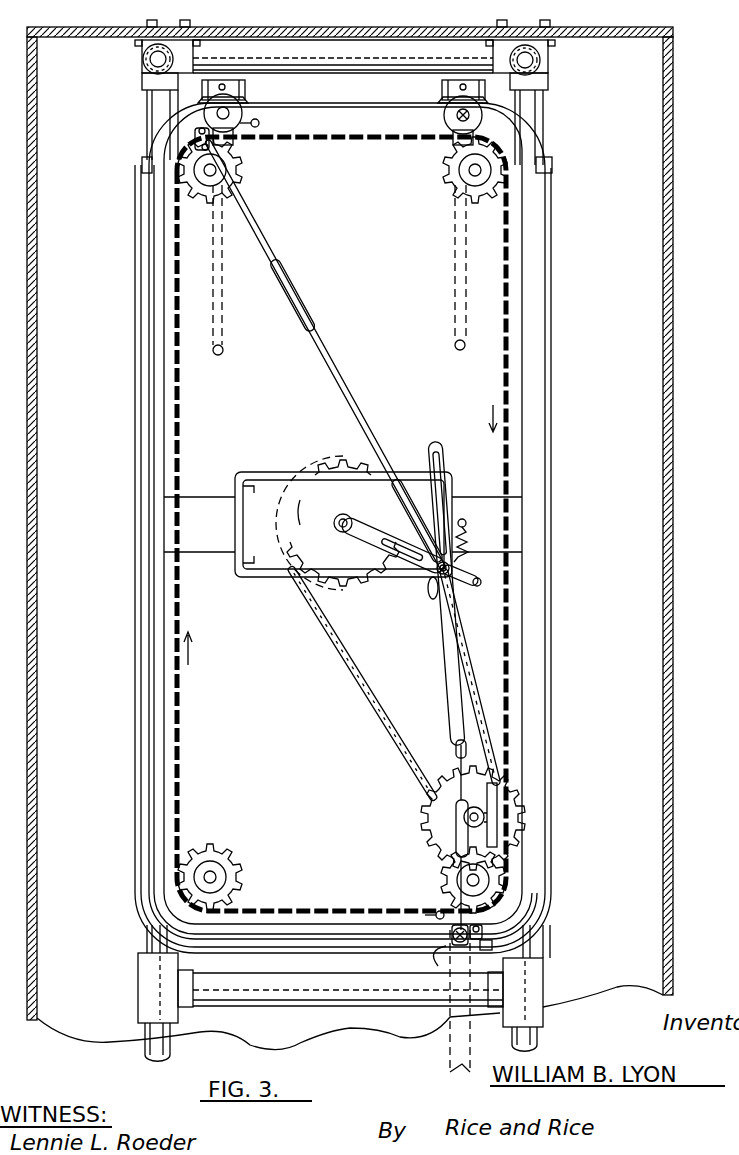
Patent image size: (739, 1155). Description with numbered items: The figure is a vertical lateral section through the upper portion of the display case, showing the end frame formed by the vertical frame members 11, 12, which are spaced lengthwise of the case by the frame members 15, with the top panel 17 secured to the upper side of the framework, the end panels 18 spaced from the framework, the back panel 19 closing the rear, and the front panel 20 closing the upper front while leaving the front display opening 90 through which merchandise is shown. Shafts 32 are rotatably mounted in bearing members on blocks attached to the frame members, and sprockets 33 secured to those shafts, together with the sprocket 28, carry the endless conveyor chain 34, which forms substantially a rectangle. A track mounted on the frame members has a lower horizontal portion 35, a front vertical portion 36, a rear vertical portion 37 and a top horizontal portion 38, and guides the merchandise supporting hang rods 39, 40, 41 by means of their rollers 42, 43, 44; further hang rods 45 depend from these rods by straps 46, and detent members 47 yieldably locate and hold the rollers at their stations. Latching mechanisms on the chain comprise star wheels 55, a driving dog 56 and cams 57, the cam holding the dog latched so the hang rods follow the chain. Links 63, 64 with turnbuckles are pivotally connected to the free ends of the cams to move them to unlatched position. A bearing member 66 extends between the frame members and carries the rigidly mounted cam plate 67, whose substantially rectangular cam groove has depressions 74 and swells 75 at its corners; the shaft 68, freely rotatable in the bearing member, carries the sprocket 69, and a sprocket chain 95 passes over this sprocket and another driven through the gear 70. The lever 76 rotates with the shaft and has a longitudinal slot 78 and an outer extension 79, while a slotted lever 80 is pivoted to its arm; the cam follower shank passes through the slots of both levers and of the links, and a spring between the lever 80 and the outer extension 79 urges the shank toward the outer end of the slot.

The vertical frame member 11 is at (532, 952).
The vertical frame member 12 is at (152, 940).
The frame member 15 is at (540, 60).
The top panel 17 is at (278, 37).
The end panel 18 is at (106, 777).
The back panel 19 is at (40, 690).
The front panel 20 is at (668, 510).
The sprocket 28 is at (438, 877).
The shaft 32 is at (210, 868).
The sprocket 33 is at (230, 868).
The endless conveyor chain 34 is at (505, 458).
The lower horizontal track portion 35 is at (305, 935).
The front vertical track portion 36 is at (535, 535).
The rear vertical track portion 37 is at (150, 538).
The top horizontal track portion 38 is at (338, 118).
The hang rod 39 is at (465, 957).
The hang rod 40 is at (205, 112).
The hang rod 41 is at (468, 118).
The roller 42 is at (452, 950).
The roller 43 is at (215, 105).
The roller 44 is at (480, 110).
The hang rod 45 is at (458, 350).
The strap 46 is at (453, 1040).
The detent member 47 is at (445, 102).
The star wheel 55 is at (438, 914).
The driving dog 56 is at (492, 946).
The cam 57 is at (478, 932).
The link 63 is at (447, 700).
The link 64 is at (340, 365).
The bearing member 66 is at (214, 532).
The cam plate 67 is at (275, 475).
The shaft 68 is at (340, 528).
The sprocket 69 is at (353, 582).
The gear 70 is at (425, 812).
The depression 74 is at (255, 488).
The swell 75 is at (250, 500).
The lever 76 is at (368, 528).
The longitudinal slot 78 is at (405, 545).
The outer extension 79 is at (465, 578).
The lever 80 is at (430, 592).
The front display opening 90 is at (662, 1000).
The sprocket chain 95 is at (355, 690).